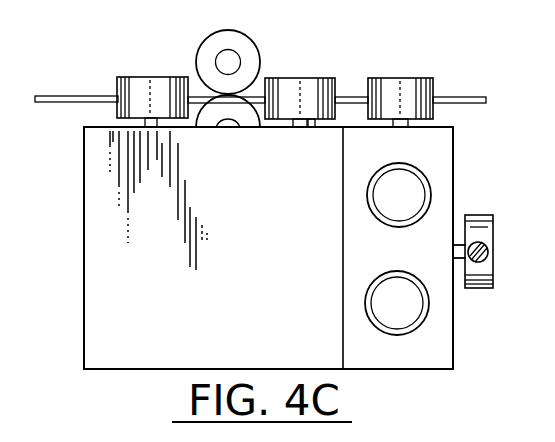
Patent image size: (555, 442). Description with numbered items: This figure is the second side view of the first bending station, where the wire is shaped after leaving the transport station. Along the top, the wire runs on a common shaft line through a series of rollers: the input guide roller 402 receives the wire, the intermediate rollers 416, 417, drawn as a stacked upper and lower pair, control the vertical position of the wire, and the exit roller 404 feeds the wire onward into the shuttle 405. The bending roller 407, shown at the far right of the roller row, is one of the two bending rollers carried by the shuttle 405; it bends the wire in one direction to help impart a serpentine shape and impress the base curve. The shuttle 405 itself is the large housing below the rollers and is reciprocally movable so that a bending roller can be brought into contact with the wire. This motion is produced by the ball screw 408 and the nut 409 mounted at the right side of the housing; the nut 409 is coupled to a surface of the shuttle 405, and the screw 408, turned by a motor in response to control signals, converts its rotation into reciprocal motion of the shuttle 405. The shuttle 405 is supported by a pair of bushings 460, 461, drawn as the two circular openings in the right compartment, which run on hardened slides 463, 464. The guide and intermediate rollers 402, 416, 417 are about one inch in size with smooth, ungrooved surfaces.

The input guide roller 402 is at (146, 77).
The exit roller 404 is at (313, 90).
The bending roller 407 is at (412, 78).
The intermediate roller 417 is at (262, 56).
The intermediate roller 416 is at (207, 126).
The shuttle 405 is at (453, 342).
The bushing 460 is at (417, 192).
The hardened slide 464 is at (367, 199).
The bushing 461 is at (379, 298).
The hardened slide 463 is at (429, 311).
The ball screw 408 is at (455, 233).
The nut 409 is at (480, 242).